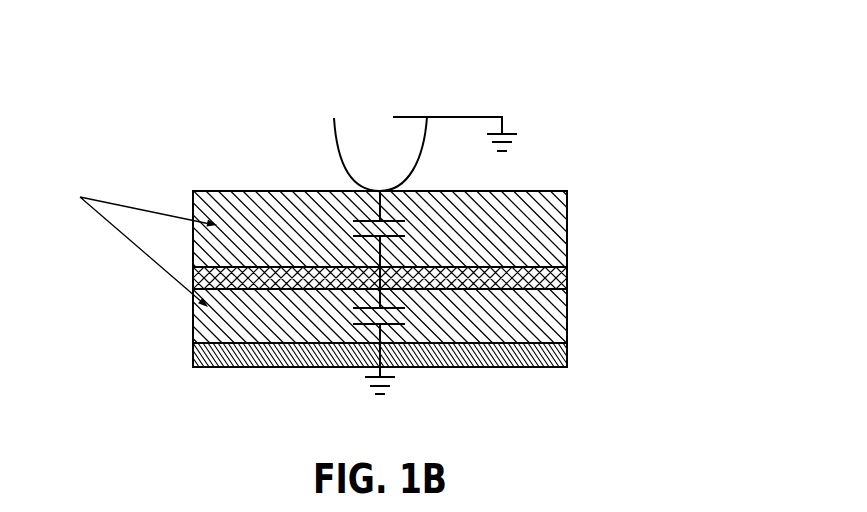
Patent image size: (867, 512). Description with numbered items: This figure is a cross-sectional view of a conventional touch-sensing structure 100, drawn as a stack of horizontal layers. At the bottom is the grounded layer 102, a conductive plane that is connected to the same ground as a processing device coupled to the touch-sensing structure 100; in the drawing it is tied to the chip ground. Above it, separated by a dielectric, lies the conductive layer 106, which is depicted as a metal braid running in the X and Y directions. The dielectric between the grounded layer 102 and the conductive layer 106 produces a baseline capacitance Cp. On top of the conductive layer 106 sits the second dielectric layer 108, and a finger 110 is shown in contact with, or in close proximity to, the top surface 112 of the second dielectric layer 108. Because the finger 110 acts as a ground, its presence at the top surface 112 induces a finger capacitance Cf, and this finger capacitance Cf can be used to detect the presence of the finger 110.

The touch-sensing structure 100 is at (205, 100).
The grounded layer 102 is at (193, 353).
The conductive layer 106 is at (550, 279).
The second dielectric layer 108 is at (568, 212).
The finger 110 is at (330, 156).
The top surface 112 is at (219, 186).